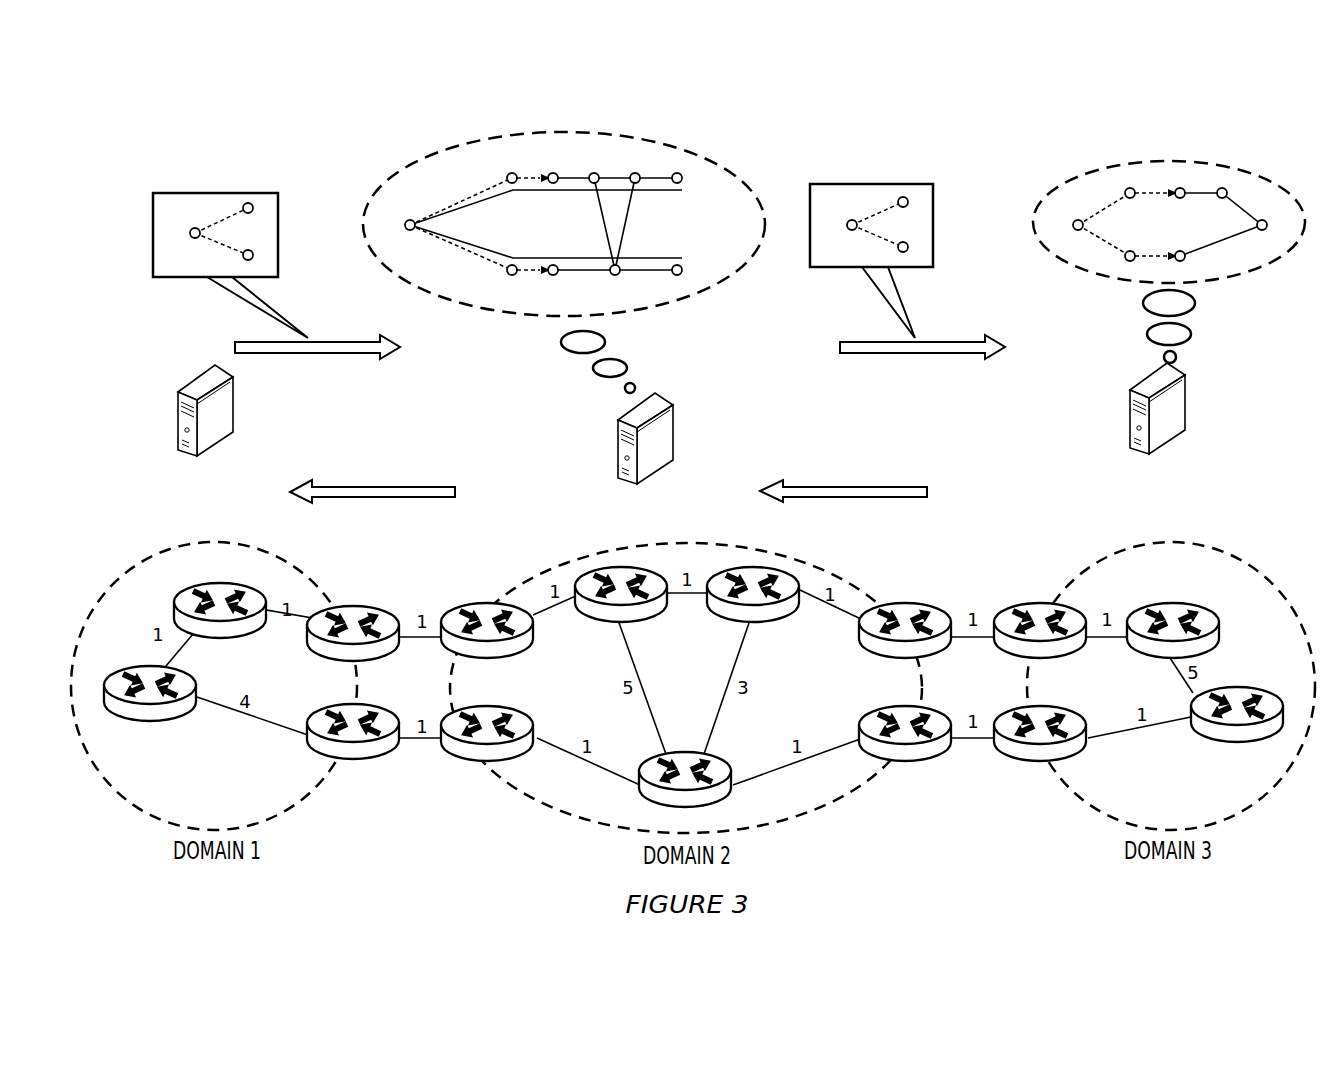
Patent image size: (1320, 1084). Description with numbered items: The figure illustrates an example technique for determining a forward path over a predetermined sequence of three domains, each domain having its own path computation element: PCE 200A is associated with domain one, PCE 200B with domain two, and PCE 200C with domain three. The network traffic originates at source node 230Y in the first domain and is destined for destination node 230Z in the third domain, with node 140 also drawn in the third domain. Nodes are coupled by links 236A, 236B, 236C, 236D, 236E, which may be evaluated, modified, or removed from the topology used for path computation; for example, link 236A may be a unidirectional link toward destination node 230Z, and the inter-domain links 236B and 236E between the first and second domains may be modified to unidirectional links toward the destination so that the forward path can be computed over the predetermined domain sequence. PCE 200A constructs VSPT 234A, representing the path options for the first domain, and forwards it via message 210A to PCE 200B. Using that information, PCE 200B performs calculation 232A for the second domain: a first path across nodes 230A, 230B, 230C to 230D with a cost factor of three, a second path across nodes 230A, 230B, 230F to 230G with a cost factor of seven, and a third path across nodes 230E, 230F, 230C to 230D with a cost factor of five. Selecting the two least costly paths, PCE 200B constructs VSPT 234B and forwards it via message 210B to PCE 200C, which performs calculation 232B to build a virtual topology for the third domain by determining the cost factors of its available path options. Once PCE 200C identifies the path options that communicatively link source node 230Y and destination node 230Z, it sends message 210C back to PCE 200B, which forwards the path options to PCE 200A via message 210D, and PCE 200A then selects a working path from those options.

The node/router 140 is at (1167, 603).
The path computation element 200A is at (178, 412).
The path computation element 200B is at (677, 430).
The path computation element 200C is at (1190, 405).
The message 210A is at (362, 355).
The message 210B is at (963, 355).
The message 210C is at (858, 487).
The message 210D is at (383, 500).
The node 230A is at (492, 603).
The node 230B is at (603, 620).
The node 230C is at (782, 620).
The node 230D is at (913, 602).
The node 230E is at (480, 760).
The node 230F is at (688, 755).
The node 230G is at (923, 758).
The source node 230Y is at (152, 718).
The destination node 230Z is at (1203, 737).
The calculation 232A is at (415, 162).
The calculation 232B is at (1233, 168).
The virtual shortest path tree 234A is at (217, 193).
The virtual shortest path tree 234B is at (872, 184).
The link 236A is at (253, 722).
The link 236B is at (417, 638).
The link 236C is at (728, 702).
The link 236D is at (645, 702).
The link 236E is at (415, 740).